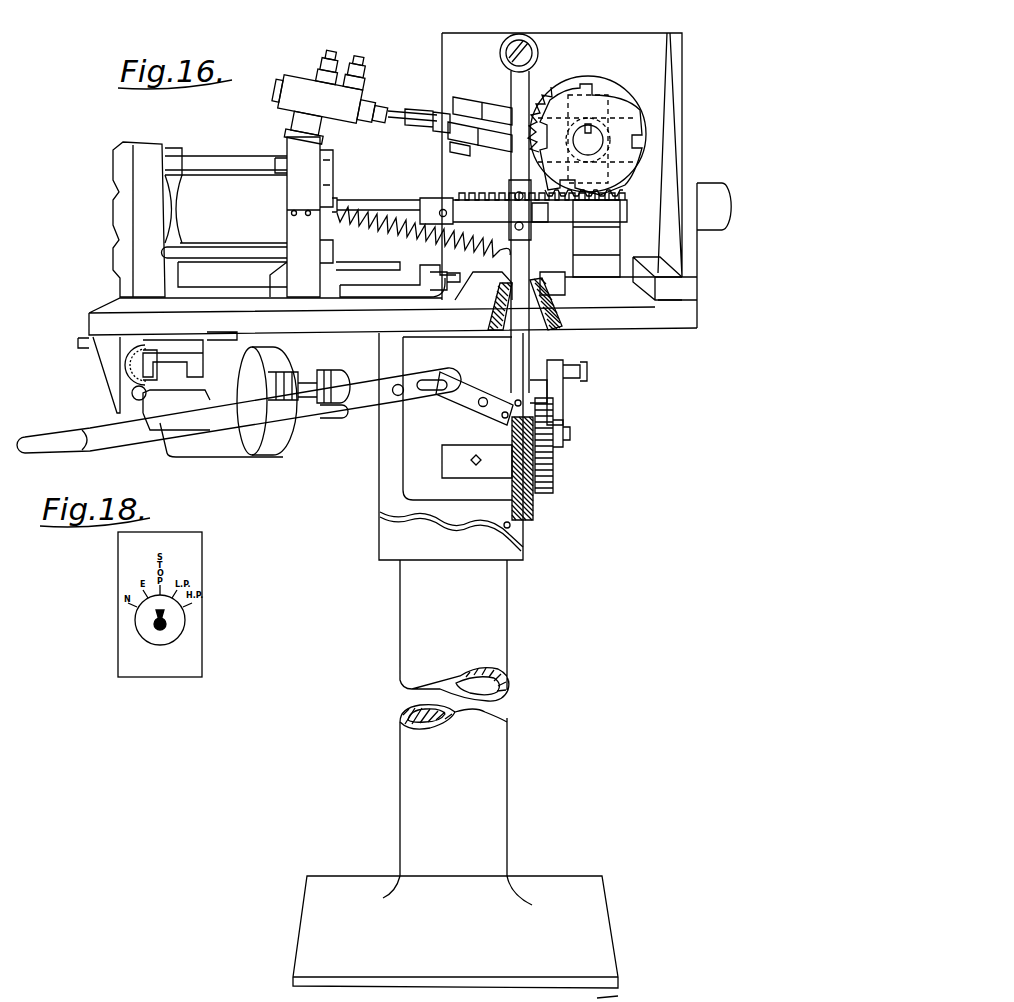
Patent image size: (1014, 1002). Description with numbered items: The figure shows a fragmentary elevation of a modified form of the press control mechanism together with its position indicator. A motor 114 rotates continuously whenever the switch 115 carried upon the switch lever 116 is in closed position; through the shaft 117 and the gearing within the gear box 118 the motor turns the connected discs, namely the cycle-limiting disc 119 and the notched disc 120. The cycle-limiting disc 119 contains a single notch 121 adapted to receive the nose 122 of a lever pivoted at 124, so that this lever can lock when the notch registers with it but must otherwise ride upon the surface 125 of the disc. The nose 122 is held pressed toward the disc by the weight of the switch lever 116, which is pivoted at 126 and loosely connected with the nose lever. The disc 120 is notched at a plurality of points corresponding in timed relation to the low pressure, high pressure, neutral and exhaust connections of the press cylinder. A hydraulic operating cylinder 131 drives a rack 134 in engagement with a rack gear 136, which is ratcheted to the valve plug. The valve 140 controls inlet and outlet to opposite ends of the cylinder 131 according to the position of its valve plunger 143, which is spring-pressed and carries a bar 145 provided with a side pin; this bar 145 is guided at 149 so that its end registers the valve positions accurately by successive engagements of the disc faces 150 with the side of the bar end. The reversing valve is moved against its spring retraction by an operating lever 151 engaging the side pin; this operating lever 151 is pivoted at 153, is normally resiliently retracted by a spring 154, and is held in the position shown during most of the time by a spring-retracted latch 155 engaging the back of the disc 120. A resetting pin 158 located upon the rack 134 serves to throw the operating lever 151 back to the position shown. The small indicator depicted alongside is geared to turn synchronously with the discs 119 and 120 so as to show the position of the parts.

The motor 114 is at (235, 445).
The switch 115 is at (150, 400).
The switch lever 116 is at (288, 440).
The shaft 117 is at (312, 380).
The gear box 118 is at (388, 440).
The cycle-limiting disc 119 is at (520, 450).
The disc 120 is at (556, 404).
The notch 121 is at (570, 434).
The nose 122 is at (503, 418).
The pivot 124 is at (470, 408).
The surface of the disc 125 is at (460, 386).
The pivot 126 is at (378, 406).
The hydraulic operating cylinder 131 is at (228, 222).
The rack 134 is at (470, 198).
The rack gear 136 is at (615, 194).
The valve 140 is at (331, 98).
The valve plunger 143 is at (410, 110).
The bar 145 is at (440, 112).
The guide 149 is at (478, 100).
The disc faces 150 is at (540, 95).
The operating lever 151 is at (530, 352).
The pivot 153 is at (530, 45).
The spring 154 is at (412, 240).
The latch 155 is at (600, 222).
The resetting pin 158 is at (412, 200).